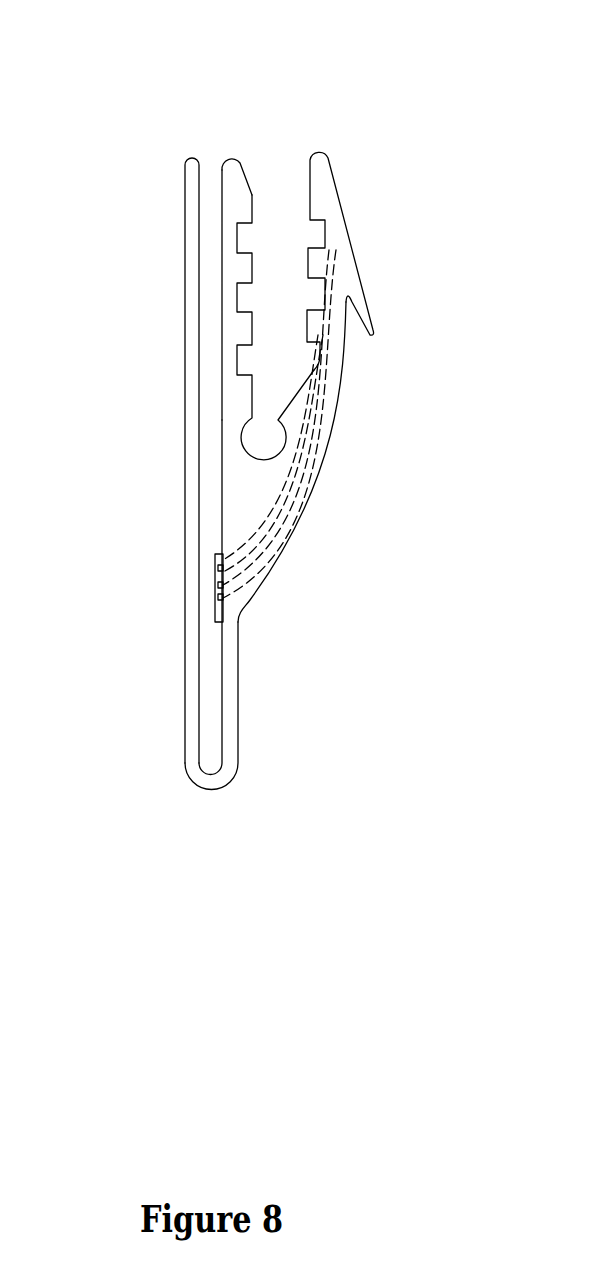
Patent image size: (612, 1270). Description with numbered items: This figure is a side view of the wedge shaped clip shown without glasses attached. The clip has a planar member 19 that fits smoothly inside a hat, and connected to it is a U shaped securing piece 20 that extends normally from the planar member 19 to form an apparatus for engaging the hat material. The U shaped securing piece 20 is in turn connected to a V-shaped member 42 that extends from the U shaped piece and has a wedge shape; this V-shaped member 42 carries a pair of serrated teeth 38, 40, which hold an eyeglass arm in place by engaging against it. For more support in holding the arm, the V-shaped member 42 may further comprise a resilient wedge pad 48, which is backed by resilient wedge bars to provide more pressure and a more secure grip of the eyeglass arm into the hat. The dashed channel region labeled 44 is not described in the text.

The planar member 19 is at (185, 463).
The U shaped securing piece 20 is at (185, 737).
The serrated tooth 38 is at (330, 250).
The serrated tooth 40 is at (242, 255).
The V-shaped member 42 is at (238, 162).
The flexible conduit (dashed channels) 44 is at (315, 438).
The resilient wedge pad 48 is at (215, 587).